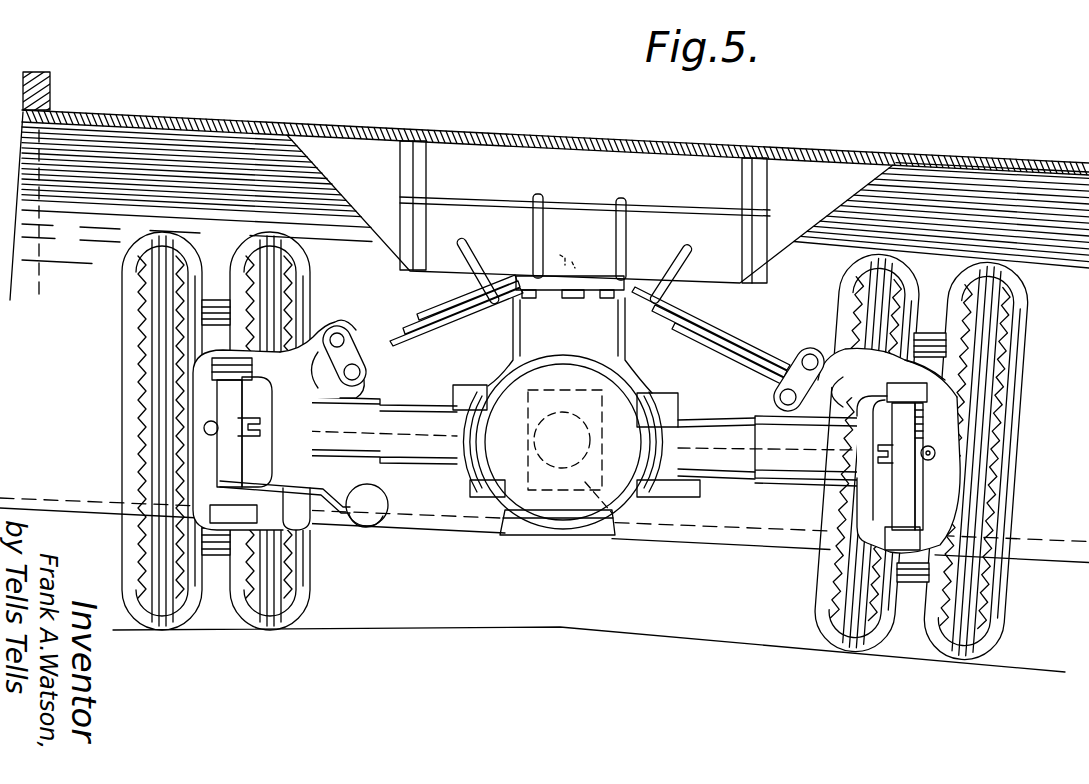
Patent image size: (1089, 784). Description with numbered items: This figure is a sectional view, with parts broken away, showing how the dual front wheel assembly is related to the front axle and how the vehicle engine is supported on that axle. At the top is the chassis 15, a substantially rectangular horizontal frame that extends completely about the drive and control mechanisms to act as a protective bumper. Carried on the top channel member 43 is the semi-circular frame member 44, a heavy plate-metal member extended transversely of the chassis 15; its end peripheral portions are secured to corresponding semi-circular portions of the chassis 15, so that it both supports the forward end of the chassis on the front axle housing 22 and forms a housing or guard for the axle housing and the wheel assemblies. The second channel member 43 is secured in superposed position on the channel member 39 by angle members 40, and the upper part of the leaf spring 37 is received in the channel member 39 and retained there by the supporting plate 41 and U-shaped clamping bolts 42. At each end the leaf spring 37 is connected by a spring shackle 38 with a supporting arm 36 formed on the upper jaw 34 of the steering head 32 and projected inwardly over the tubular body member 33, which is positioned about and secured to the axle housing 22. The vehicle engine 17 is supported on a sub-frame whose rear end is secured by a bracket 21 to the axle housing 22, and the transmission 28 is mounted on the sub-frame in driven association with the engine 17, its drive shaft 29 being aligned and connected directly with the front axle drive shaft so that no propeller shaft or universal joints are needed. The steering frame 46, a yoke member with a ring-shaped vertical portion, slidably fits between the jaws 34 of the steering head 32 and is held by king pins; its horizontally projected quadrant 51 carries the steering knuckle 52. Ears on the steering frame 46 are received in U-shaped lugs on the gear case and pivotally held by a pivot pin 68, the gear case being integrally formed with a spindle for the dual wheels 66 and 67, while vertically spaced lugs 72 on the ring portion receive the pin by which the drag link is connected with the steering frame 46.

The chassis 15 is at (68, 92).
The semi-circular frame member 44 is at (945, 158).
The second channel member 43 is at (590, 209).
The angle members 40 is at (420, 240).
The channel member 39 is at (585, 223).
The U-shaped clamping bolts 42 is at (530, 236).
The supporting plate 41 is at (548, 272).
The vehicle engine 17 is at (612, 347).
The bracket 21 is at (660, 403).
The drive shaft 29 is at (577, 455).
The transmission 28 is at (632, 523).
The axle housing 22 is at (716, 417).
The steering head 32 is at (372, 400).
The tubular body member 33 is at (760, 484).
The leaf spring 37 is at (740, 320).
The supporting arm 36 is at (308, 342).
The spring shackle 38 is at (354, 338).
The jaws 34 is at (848, 386).
The steering frame 46 is at (231, 458).
The lugs 72 is at (264, 427).
The pivot pin 68 is at (930, 446).
The quadrant 51 is at (320, 473).
The steering knuckle 52 is at (374, 500).
The dual wheel 67 is at (843, 653).
The dual wheel 66 is at (949, 663).